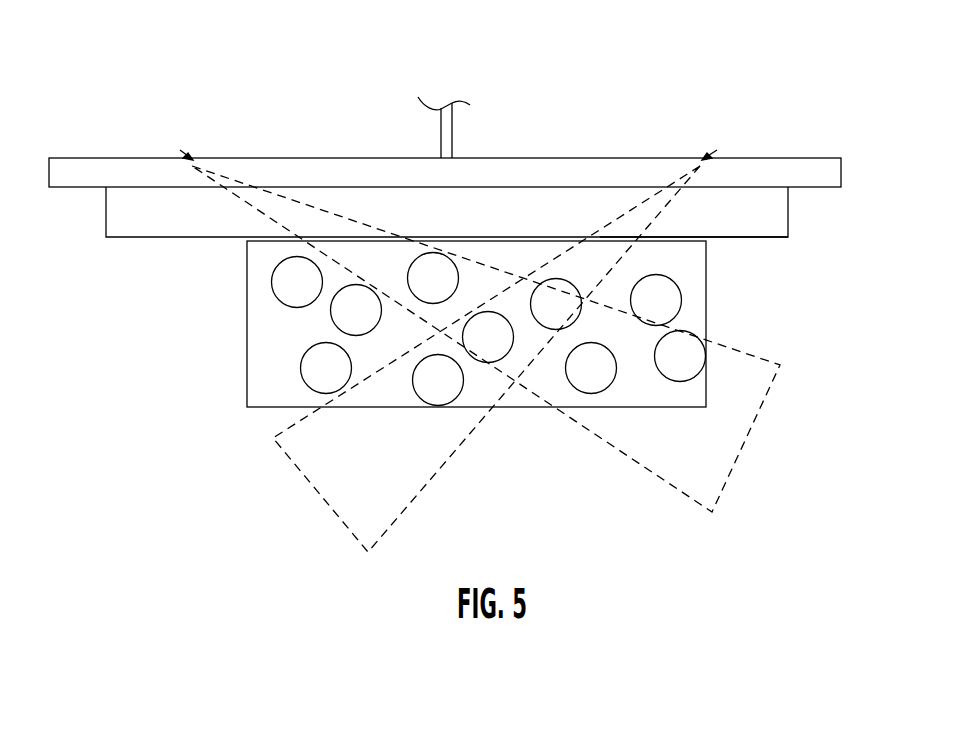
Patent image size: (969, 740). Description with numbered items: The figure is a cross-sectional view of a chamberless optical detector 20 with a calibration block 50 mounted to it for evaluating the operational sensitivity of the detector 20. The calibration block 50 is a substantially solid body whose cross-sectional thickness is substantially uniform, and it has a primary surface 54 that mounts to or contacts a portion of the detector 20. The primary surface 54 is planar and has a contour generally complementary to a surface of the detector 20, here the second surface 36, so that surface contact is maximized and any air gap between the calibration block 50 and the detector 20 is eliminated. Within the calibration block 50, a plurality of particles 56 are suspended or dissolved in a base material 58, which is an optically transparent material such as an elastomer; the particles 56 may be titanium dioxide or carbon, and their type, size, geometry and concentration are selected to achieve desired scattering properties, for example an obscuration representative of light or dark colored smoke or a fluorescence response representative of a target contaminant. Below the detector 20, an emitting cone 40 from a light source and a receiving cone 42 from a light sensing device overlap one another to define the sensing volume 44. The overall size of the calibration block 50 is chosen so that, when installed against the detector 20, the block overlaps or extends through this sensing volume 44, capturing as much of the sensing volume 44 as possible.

The detector 20 is at (100, 118).
The second surface 36 is at (157, 238).
The primary surface 54 is at (683, 237).
The base material 58 is at (695, 280).
The calibration block 50 is at (502, 324).
The particles 56 is at (350, 310).
The emitting cone 40 is at (713, 445).
The receiving cone 42 is at (357, 478).
The sensing volume 44 is at (523, 343).